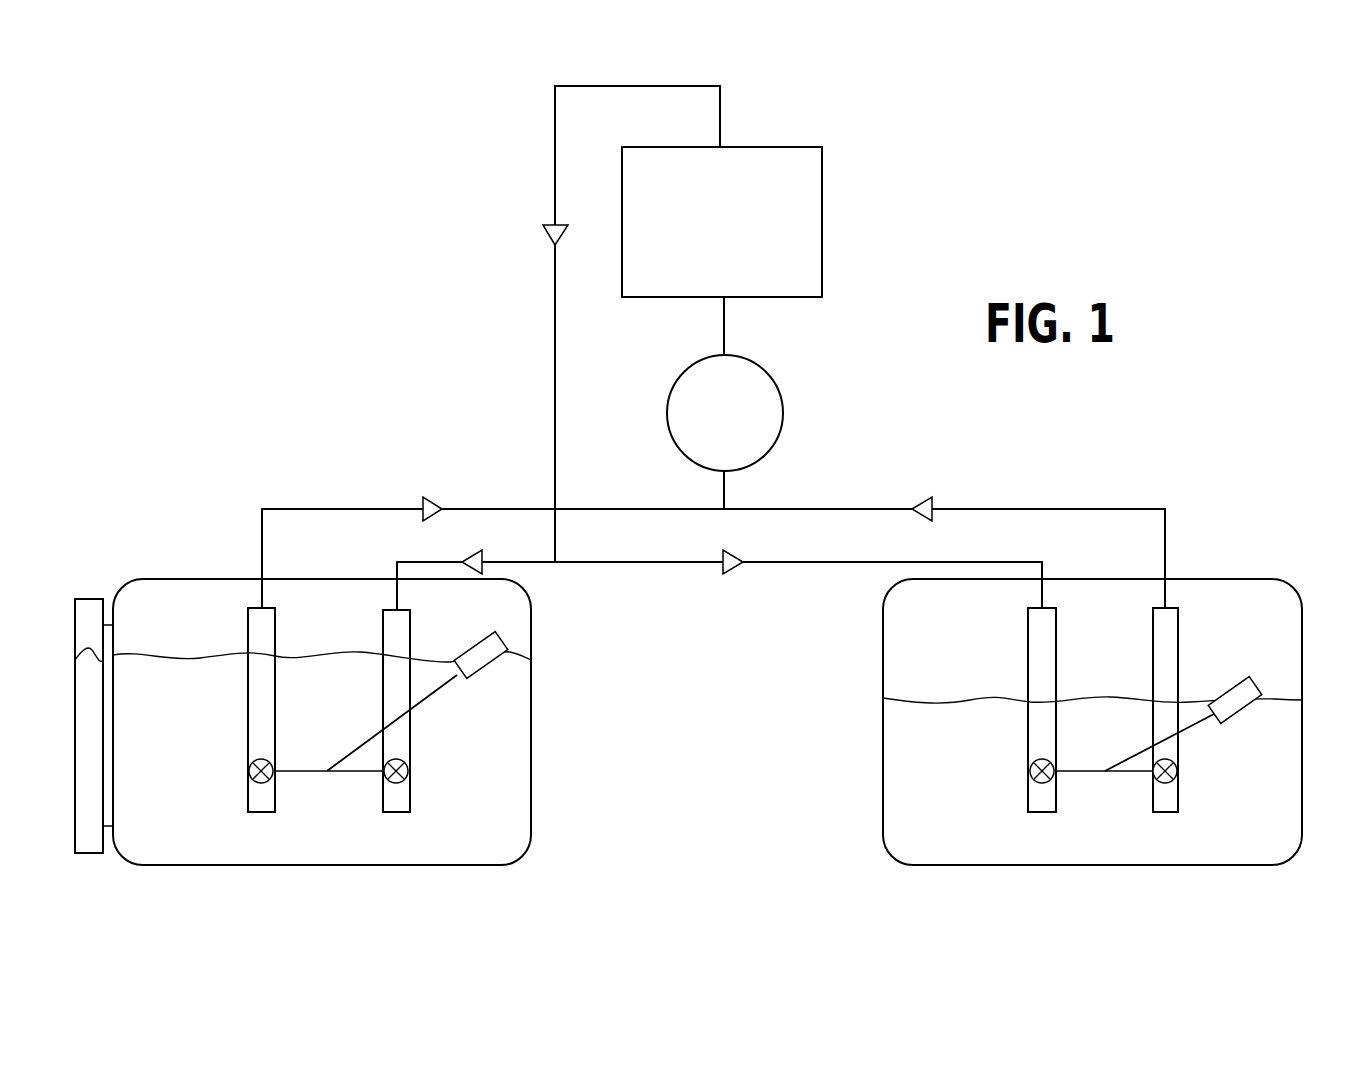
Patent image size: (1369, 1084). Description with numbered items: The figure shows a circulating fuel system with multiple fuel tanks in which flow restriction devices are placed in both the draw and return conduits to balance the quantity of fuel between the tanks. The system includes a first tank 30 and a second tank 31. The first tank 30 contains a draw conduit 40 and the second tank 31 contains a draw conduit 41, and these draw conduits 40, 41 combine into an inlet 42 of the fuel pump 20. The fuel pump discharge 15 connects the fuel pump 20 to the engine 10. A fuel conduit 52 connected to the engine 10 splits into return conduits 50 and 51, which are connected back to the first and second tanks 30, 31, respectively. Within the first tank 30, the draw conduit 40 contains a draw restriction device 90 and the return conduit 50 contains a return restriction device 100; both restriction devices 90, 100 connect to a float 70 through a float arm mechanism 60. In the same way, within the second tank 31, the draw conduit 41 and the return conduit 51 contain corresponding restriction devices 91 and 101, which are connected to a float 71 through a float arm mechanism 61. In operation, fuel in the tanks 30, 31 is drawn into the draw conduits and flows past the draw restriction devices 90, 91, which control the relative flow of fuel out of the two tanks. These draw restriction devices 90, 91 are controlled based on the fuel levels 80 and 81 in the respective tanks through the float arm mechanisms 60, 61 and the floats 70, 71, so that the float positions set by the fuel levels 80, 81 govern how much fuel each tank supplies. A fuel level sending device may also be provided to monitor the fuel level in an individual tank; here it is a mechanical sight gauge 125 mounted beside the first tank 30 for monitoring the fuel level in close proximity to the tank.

The engine 10 is at (822, 247).
The fuel pump discharge 15 is at (724, 333).
The fuel pump 20 is at (783, 405).
The inlet 42 is at (724, 497).
The fuel conduit 52 is at (555, 365).
The first tank 30 is at (531, 778).
The second tank 31 is at (883, 820).
The draw conduit 40 is at (247, 707).
The return conduit 50 is at (410, 740).
The draw conduit 41 is at (1178, 652).
The return conduit 51 is at (1028, 645).
The float arm mechanism 60 is at (360, 746).
The float arm mechanism 61 is at (1135, 750).
The float 70 is at (505, 642).
The float 71 is at (1243, 715).
The fuel level 80 is at (217, 653).
The fuel level 81 is at (933, 700).
The draw restriction device 90 is at (248, 773).
The return restriction device 100 is at (408, 778).
The return restriction device 101 is at (1030, 773).
The draw restriction device 91 is at (1180, 780).
The sight gauge 125 is at (93, 853).